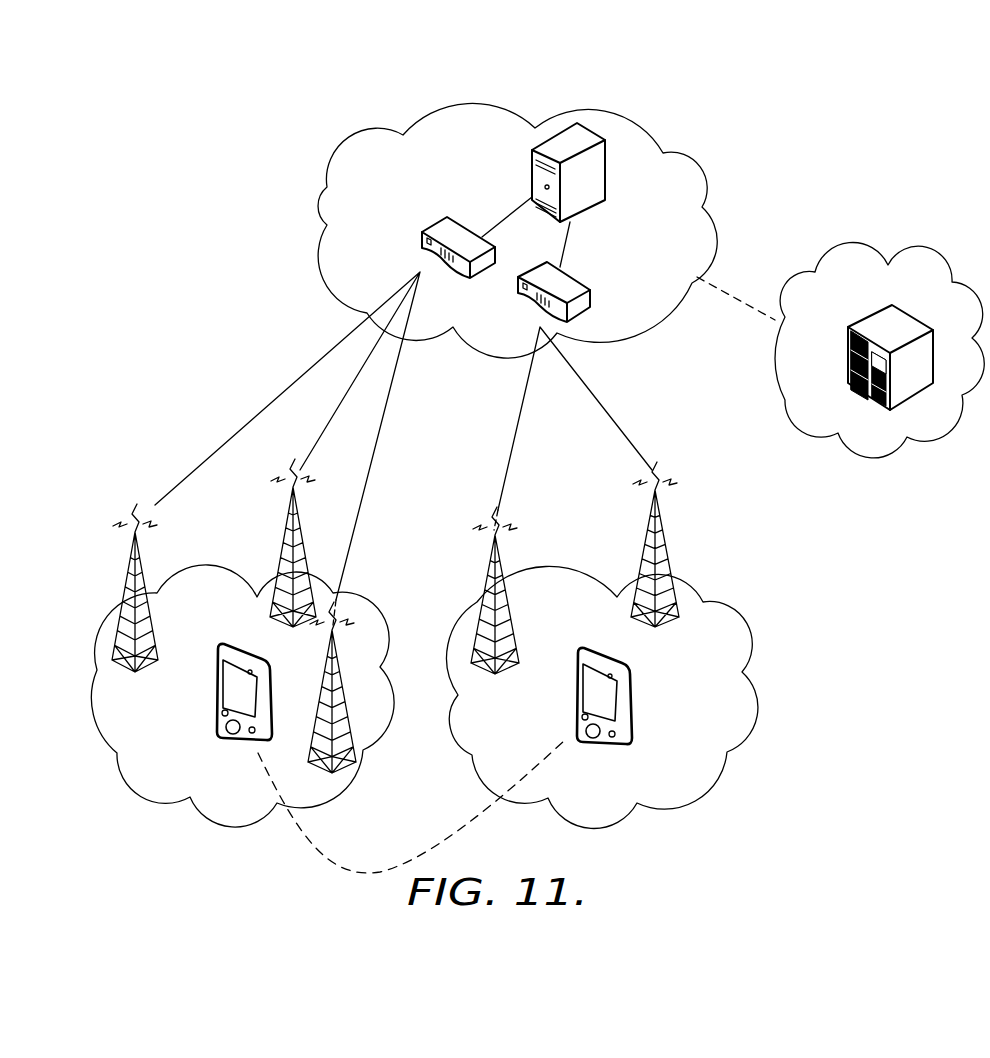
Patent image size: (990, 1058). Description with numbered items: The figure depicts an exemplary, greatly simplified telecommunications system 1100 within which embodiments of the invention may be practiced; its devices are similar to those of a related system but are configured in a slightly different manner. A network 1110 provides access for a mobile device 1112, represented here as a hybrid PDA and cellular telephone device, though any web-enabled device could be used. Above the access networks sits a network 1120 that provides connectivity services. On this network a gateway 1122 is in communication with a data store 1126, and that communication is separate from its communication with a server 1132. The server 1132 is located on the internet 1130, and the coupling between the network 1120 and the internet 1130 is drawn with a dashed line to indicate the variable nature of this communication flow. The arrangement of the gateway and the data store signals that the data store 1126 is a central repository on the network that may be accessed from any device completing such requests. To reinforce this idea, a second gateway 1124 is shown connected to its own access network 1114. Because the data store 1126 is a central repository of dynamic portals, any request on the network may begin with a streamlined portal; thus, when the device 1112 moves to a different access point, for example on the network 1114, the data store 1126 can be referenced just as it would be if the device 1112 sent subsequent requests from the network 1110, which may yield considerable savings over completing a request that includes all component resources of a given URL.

The system 1100 is at (80, 178).
The network 1110 is at (320, 812).
The mobile device 1112 is at (238, 643).
The access network 1114 is at (680, 813).
The network 1120 is at (357, 148).
The gateway 1122 is at (435, 222).
The second gateway 1124 is at (587, 273).
The data store 1126 is at (593, 208).
The internet 1130 is at (843, 240).
The server 1132 is at (863, 322).